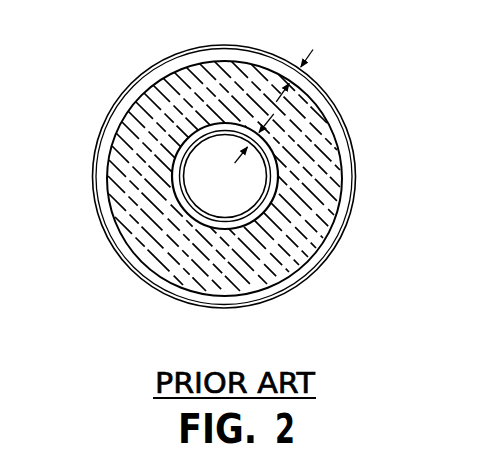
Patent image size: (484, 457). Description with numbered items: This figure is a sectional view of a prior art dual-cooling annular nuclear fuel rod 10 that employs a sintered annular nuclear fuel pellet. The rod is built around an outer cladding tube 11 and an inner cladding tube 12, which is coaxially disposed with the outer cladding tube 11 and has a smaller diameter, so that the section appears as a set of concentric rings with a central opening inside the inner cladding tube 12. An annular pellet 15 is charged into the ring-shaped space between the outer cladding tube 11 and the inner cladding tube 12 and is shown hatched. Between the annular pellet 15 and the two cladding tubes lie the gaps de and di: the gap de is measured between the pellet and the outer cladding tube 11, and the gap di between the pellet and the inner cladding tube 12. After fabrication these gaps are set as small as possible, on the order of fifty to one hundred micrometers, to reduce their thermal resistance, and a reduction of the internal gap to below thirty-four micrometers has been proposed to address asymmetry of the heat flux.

The prior art busbar / conductor assembly 10 is at (71, 77).
The outer cladding tube 11 is at (355, 180).
The inner cladding tube 12 is at (188, 202).
The annular pellet 15 is at (315, 227).
The gap de is at (302, 95).
The gap di is at (265, 150).